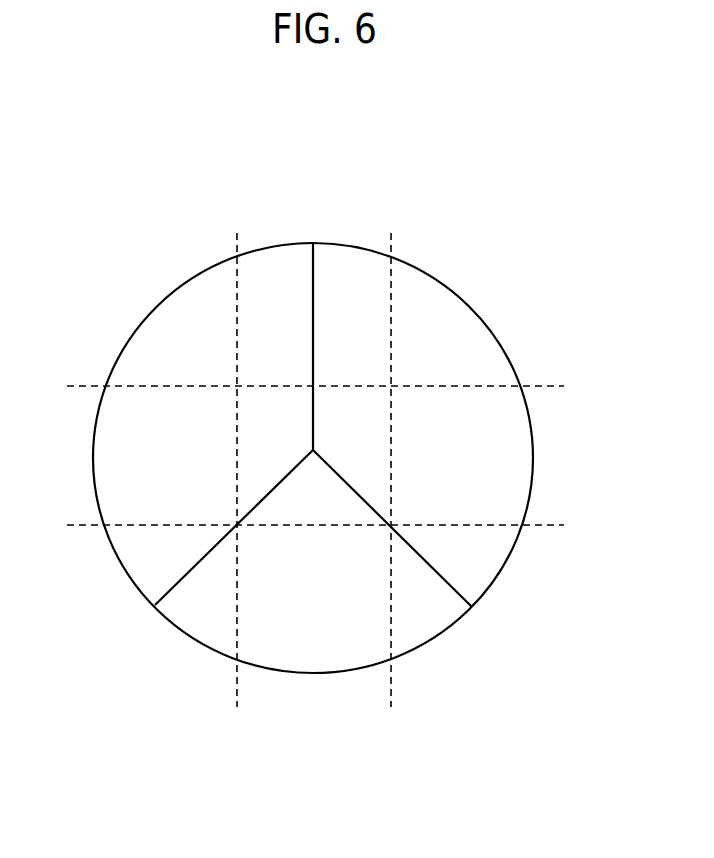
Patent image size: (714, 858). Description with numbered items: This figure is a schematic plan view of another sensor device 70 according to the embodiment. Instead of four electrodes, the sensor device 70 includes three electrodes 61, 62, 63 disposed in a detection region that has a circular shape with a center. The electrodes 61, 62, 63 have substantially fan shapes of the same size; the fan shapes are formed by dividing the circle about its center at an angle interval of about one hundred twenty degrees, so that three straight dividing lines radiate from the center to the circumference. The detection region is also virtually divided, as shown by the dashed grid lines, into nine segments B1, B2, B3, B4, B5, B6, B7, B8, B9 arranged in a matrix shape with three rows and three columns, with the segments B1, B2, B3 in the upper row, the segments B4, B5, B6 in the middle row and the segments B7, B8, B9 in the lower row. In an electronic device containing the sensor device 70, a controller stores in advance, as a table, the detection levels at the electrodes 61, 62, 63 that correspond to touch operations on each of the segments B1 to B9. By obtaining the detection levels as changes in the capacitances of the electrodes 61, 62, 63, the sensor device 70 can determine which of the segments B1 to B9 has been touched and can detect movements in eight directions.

The sensor device 70 is at (502, 263).
The electrode 61 is at (155, 353).
The electrode 62 is at (465, 353).
The electrode 63 is at (325, 655).
The segment B1 is at (184, 320).
The segment B2 is at (339, 320).
The segment B3 is at (445, 320).
The segment B4 is at (176, 452).
The segment B5 is at (350, 432).
The segment B6 is at (462, 452).
The segment B7 is at (135, 622).
The segment B8 is at (312, 589).
The segment B9 is at (490, 620).